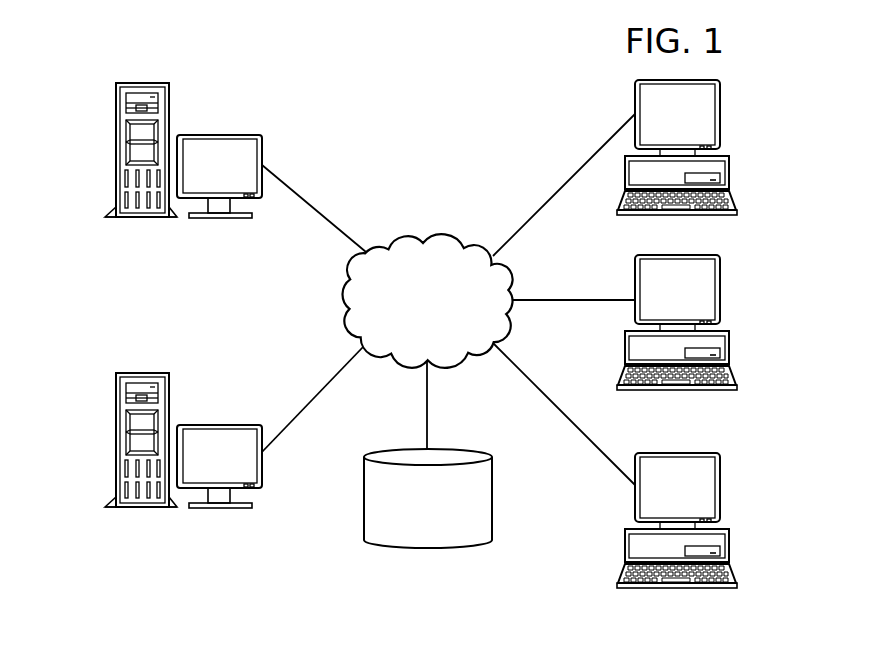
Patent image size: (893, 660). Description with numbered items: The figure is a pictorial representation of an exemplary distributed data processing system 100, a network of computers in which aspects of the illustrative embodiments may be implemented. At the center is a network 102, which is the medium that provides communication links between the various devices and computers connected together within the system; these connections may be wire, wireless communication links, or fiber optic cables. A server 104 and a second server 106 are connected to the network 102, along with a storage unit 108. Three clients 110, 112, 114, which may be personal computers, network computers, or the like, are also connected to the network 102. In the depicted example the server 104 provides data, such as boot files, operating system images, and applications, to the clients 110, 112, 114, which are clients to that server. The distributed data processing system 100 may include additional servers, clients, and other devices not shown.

The distributed data processing system 100 is at (297, 66).
The network 102 is at (403, 238).
The server 104 is at (116, 152).
The server 106 is at (116, 438).
The storage unit 108 is at (458, 548).
The client 110 is at (720, 113).
The client 112 is at (720, 292).
The client 114 is at (720, 487).